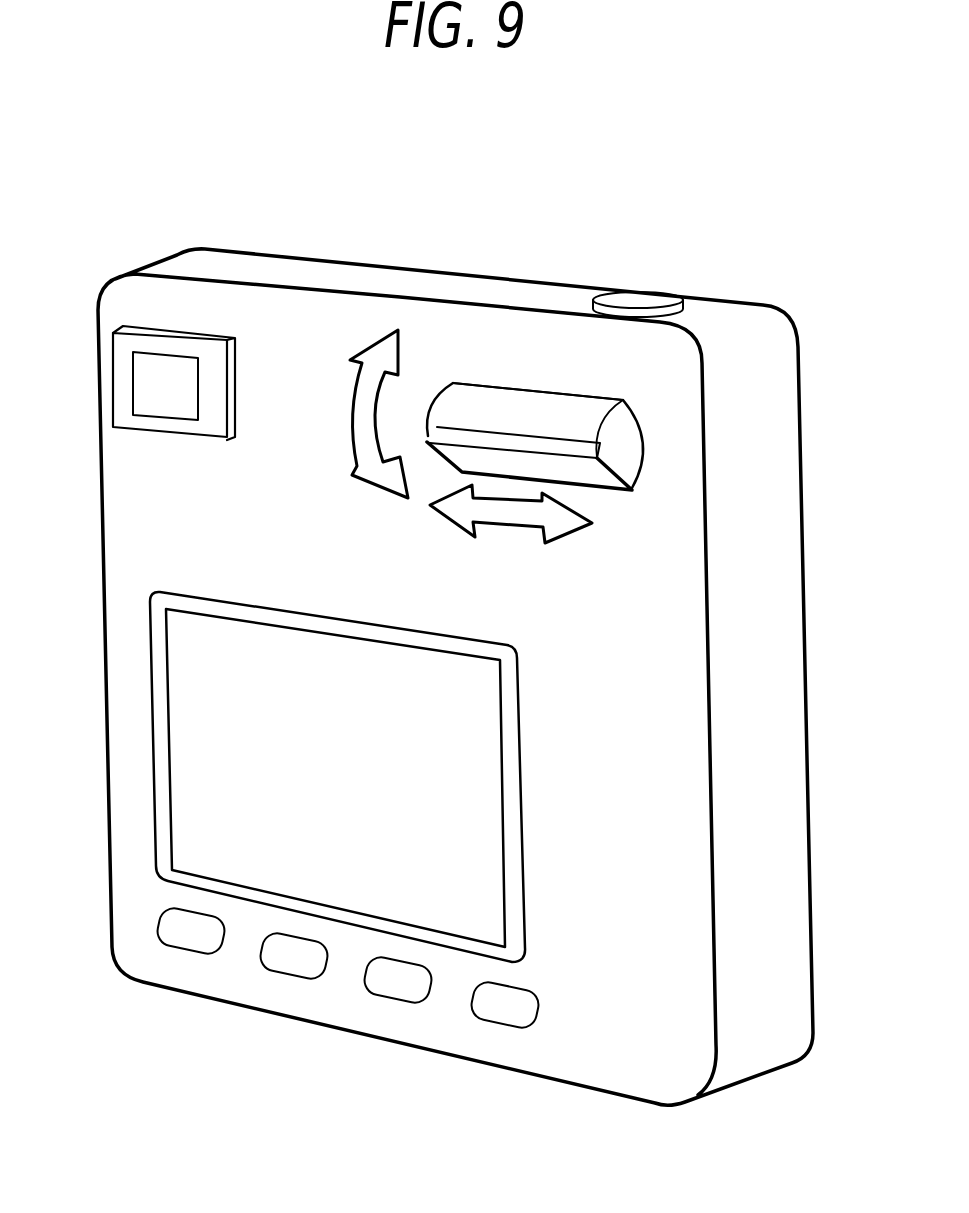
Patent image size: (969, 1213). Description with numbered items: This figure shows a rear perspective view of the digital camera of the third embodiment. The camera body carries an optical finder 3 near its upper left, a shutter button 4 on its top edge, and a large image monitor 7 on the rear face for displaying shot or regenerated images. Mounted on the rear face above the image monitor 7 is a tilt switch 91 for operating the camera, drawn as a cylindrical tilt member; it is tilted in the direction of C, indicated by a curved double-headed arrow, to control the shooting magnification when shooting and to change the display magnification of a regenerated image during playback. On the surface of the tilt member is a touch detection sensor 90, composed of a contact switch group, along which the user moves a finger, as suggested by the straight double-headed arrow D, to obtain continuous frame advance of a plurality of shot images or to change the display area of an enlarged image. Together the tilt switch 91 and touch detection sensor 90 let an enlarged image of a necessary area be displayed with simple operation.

The optical finder 3 is at (157, 382).
The shutter button 4 is at (643, 300).
The image monitor 7 is at (190, 750).
The touch detection sensor 90 is at (540, 445).
The tilt switch 91 is at (587, 410).
The tilt direction C is at (352, 410).
The slide direction arrow D is at (510, 525).